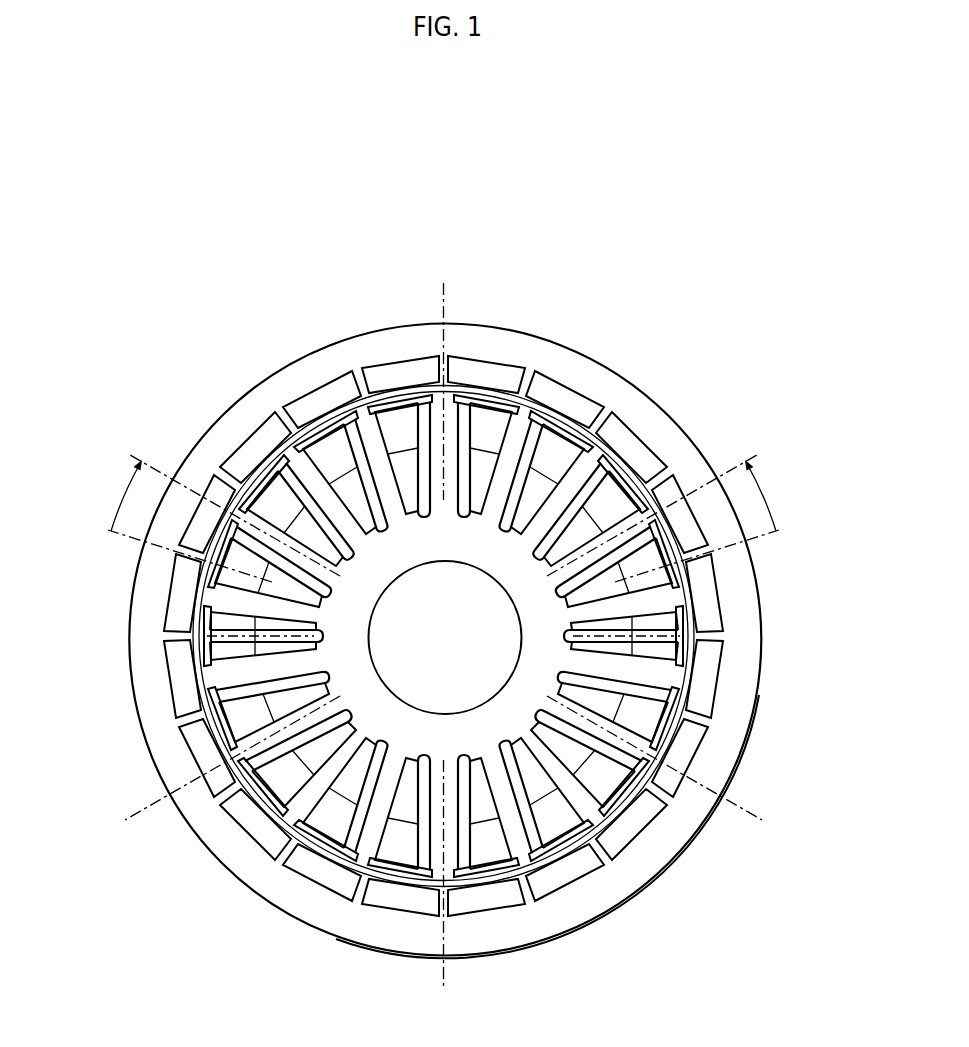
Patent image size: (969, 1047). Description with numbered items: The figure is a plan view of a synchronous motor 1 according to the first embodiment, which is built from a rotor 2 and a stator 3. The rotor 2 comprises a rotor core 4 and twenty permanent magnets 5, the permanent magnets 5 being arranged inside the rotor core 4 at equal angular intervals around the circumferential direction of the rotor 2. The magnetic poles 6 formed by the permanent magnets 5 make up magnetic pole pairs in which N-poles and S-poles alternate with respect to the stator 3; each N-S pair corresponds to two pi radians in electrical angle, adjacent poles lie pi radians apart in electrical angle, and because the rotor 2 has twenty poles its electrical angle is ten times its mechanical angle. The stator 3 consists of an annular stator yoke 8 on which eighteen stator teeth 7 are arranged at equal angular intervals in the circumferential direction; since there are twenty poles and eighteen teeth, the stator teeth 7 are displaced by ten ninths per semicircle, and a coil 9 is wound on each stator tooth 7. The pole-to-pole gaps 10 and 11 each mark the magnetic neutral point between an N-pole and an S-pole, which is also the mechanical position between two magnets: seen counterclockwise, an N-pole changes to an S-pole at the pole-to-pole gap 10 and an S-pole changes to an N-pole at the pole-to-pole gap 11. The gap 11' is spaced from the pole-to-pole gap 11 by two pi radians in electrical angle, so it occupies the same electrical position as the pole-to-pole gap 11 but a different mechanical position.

The synchronous motor 1 is at (455, 154).
The rotor 2 is at (223, 409).
The stator 3 is at (378, 562).
The rotor core 4 is at (271, 385).
The permanent magnet 5 is at (383, 380).
The magnetic pole 6 is at (398, 385).
The stator tooth 7 is at (447, 550).
The stator yoke 8 is at (479, 432).
The coil 9 is at (516, 385).
The pole-to-pole gap 10 is at (445, 382).
The pole-to-pole gap 11 is at (574, 557).
The pole-to-pole gap 11' is at (314, 553).